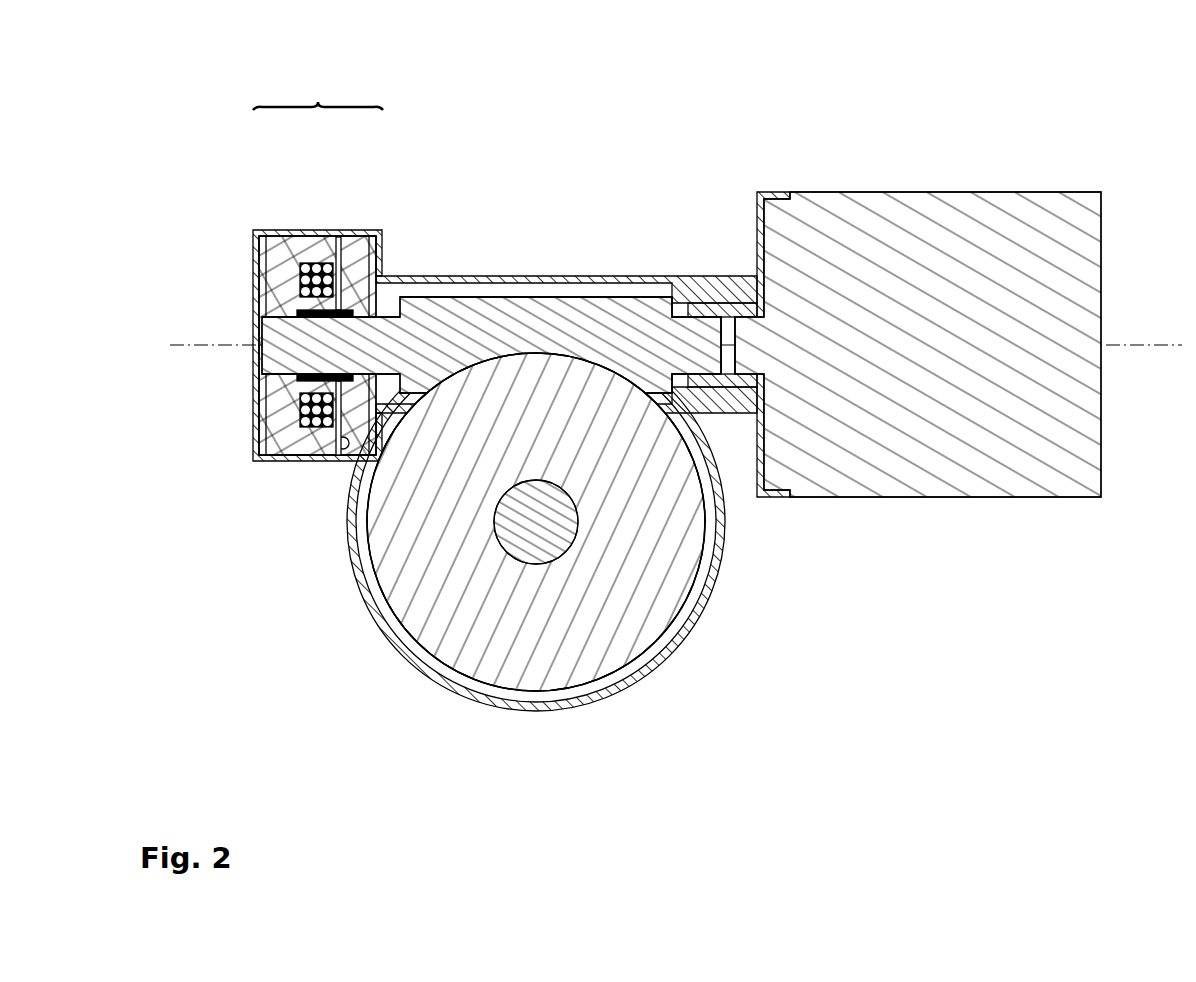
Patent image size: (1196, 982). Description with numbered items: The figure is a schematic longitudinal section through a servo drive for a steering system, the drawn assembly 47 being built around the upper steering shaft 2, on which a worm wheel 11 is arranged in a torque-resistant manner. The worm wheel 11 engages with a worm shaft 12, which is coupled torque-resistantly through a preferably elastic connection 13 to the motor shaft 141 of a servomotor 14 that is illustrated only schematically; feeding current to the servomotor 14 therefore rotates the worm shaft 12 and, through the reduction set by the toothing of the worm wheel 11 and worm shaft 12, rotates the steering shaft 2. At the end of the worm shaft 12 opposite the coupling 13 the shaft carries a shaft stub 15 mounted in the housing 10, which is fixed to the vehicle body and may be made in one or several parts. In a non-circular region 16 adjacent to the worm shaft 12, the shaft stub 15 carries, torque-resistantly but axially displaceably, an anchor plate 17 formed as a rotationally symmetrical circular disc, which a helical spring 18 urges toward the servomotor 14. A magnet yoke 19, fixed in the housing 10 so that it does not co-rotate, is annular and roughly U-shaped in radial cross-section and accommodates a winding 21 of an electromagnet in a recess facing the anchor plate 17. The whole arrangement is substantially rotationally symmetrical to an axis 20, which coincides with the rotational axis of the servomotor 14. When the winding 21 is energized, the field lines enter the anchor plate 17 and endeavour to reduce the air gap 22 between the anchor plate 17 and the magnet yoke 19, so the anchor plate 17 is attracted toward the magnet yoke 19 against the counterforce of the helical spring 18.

The electric drive unit 47 is at (318, 79).
The helical spring 18 is at (257, 258).
The winding 21 is at (312, 260).
The air gap 22 is at (339, 260).
The anchor plate 17 is at (382, 250).
The non-circular region 16 is at (365, 335).
The shaft stub 15 is at (285, 333).
The worm shaft 12 is at (545, 305).
The elastic connection 13 is at (733, 304).
The servomotor 14 is at (836, 229).
The motor shaft 141 is at (748, 352).
The axis 20 is at (1117, 344).
The housing 10 is at (257, 418).
The magnet yoke 19 is at (283, 442).
The upper steering shaft 2 is at (532, 532).
The worm wheel 11 is at (530, 655).